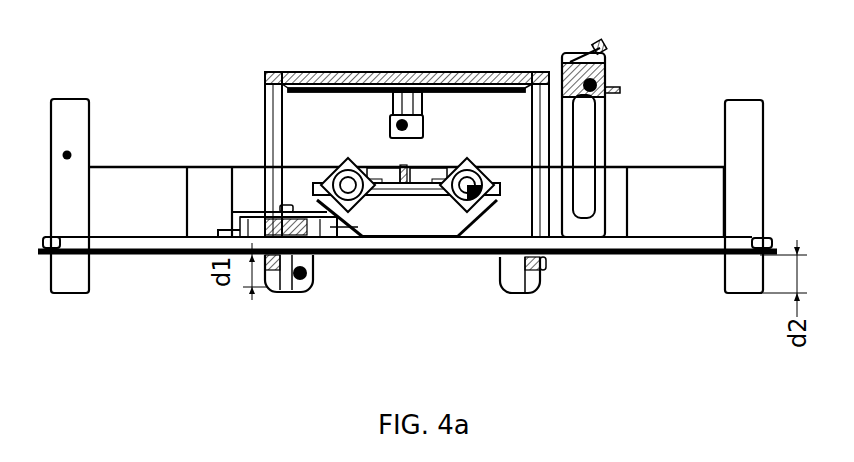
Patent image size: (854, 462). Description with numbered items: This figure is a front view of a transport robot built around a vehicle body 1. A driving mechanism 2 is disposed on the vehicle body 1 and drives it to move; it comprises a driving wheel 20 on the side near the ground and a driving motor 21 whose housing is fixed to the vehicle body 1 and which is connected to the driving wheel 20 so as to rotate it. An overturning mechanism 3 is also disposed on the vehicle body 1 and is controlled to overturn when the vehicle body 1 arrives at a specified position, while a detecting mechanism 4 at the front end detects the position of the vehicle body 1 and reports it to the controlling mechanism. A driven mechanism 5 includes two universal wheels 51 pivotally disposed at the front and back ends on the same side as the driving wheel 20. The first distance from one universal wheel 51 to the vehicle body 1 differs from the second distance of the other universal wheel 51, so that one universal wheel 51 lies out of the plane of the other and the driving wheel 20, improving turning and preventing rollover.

The vehicle body 1 is at (407, 312).
The driving mechanism 2 is at (718, 164).
The driving wheel 20 is at (65, 125).
The driving motor 21 is at (388, 132).
The overturning mechanism 3 is at (365, 136).
The detecting mechanism 4 is at (407, 70).
The driven mechanism 5 is at (332, 312).
The universal wheel 51 is at (313, 268).